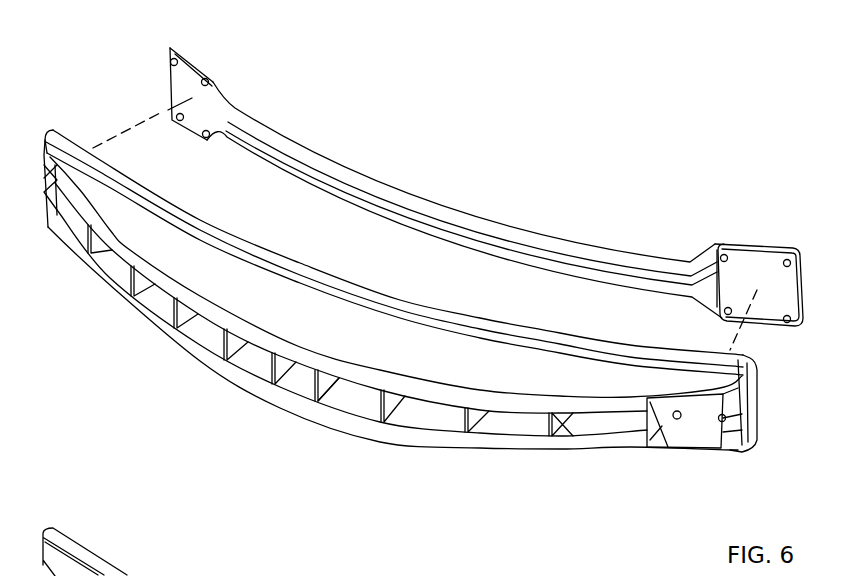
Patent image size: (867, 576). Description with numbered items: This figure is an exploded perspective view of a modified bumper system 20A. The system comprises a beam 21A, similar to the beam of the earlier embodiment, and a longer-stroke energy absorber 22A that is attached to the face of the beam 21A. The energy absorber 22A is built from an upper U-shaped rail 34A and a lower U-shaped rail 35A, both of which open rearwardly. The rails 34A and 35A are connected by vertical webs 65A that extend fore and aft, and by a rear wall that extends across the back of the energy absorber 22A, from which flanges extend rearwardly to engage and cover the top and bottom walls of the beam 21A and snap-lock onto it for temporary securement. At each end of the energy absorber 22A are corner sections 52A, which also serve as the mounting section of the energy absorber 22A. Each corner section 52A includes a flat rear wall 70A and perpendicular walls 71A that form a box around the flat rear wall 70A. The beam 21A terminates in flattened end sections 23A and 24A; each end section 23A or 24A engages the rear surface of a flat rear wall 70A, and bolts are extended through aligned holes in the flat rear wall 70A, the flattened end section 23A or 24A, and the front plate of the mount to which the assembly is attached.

The modified bumper system 20A is at (727, 547).
The beam 21A is at (436, 203).
The energy absorber 22A is at (115, 310).
The end section of the beam 23A is at (770, 242).
The end section of the beam 24A is at (197, 62).
The upper U-shaped rail 34A is at (365, 377).
The lower U-shaped rail 35A is at (510, 455).
The vertical webs 65A is at (562, 439).
The flat rear wall 70A is at (703, 408).
The perpendicular walls 71A is at (670, 420).
The corner sections 52A is at (777, 465).